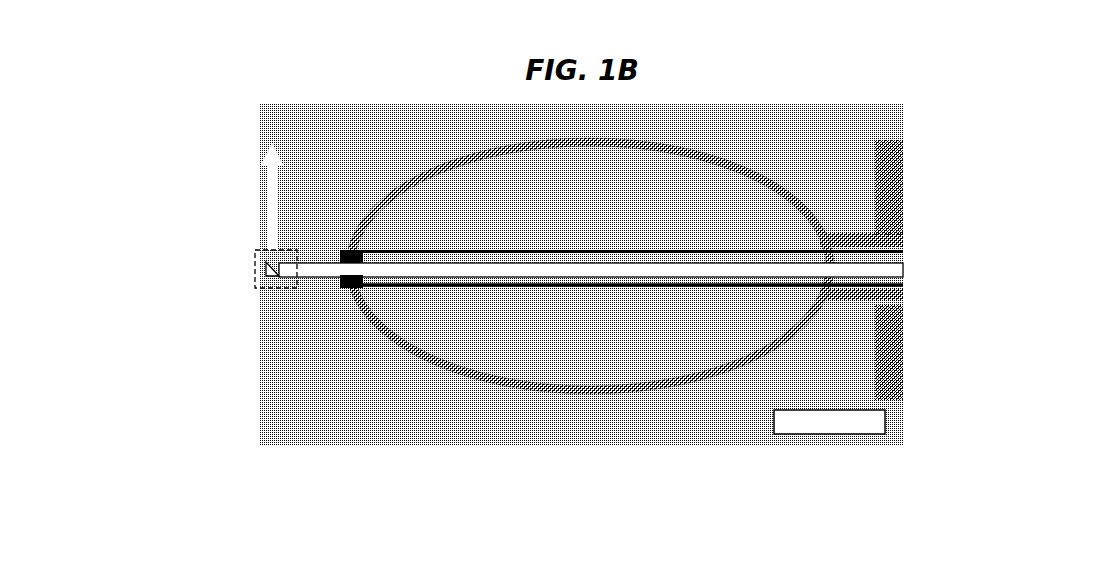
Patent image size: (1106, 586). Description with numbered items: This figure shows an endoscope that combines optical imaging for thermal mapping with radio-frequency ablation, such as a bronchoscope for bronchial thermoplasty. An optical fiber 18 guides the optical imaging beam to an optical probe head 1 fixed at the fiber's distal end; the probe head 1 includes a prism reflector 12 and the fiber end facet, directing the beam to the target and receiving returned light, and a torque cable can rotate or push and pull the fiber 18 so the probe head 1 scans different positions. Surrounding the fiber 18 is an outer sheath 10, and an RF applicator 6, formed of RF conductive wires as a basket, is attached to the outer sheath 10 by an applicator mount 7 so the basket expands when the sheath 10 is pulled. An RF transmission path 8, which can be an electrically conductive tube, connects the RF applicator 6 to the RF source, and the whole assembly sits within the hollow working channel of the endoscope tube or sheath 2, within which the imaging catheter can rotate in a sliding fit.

The optical probe head 1 is at (218, 263).
The endoscope tube or sheath 2 is at (889, 148).
The RF applicator 6 is at (806, 326).
The applicator mount 7 is at (352, 244).
The RF transmission path 8 is at (905, 293).
The outer sheath 10 is at (520, 288).
The prism reflector 12 is at (253, 268).
The optical fiber 18 is at (312, 278).